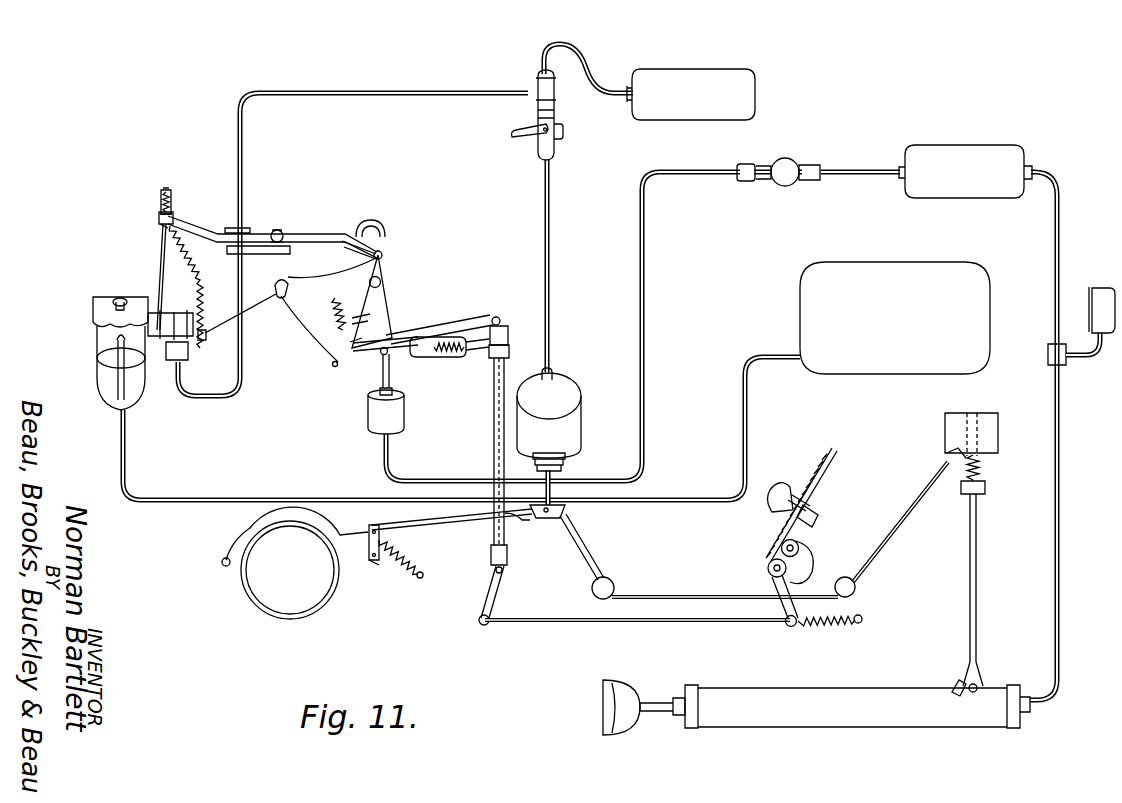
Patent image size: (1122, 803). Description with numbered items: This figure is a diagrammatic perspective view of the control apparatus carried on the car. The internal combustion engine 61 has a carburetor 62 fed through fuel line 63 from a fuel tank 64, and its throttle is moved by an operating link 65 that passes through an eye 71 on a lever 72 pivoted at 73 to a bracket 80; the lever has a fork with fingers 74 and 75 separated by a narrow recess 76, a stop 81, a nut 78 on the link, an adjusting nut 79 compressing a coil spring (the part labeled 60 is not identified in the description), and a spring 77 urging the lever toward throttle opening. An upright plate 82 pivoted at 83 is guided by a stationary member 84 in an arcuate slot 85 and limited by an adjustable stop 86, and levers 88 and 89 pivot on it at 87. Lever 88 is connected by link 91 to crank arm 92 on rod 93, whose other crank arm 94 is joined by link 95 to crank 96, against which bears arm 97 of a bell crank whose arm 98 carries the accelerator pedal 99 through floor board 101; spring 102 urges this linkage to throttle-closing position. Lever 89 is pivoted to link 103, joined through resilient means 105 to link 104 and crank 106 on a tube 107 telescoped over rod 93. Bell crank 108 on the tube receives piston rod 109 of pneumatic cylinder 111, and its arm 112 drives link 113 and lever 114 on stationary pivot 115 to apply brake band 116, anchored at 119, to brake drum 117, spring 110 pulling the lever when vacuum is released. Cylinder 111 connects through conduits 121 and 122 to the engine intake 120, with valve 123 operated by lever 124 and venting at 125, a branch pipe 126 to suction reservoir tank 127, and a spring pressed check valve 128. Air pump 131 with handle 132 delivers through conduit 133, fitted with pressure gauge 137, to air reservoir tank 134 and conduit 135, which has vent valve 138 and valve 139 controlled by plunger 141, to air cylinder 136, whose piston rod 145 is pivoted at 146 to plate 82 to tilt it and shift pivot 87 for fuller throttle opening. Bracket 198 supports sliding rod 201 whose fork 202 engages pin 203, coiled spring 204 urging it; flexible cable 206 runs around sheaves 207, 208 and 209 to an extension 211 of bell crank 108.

The threaded post 60 is at (160, 200).
The internal combustion engine 61 is at (333, 303).
The carburetor 62 is at (108, 337).
The fuel line 63 is at (297, 498).
The fuel tank 64 is at (905, 275).
The operating link 65 is at (158, 275).
The eye 71 is at (158, 216).
The lever 72 is at (258, 233).
The pivot 73 is at (284, 232).
The finger 74 is at (370, 220).
The finger 75 is at (360, 254).
The recess 76 is at (381, 250).
The spring 77 is at (190, 254).
The nut 78 is at (162, 225).
The adjusting nut 79 is at (176, 196).
The bracket 80 is at (272, 255).
The stop 81 is at (246, 227).
The plate 82 is at (314, 326).
The pivot 83 is at (356, 342).
The stationary member 84 is at (260, 308).
The arcuate slot 85 is at (282, 300).
The adjustable stop 86 is at (333, 366).
The pivot 87 is at (381, 281).
The lever 88 is at (382, 300).
The lever 89 is at (372, 317).
The link 91 is at (492, 314).
The crank arm 92 is at (501, 321).
The rod 93 is at (509, 336).
The crank arm 94 is at (492, 598).
The link 95 is at (702, 624).
The crank 96 is at (788, 626).
The bell crank arm 97 is at (807, 563).
The bell crank arm 98 is at (818, 512).
The accelerator pedal 99 is at (791, 484).
The floor board 101 is at (827, 477).
The spring 102 is at (845, 624).
The link 103 is at (410, 350).
The link 104 is at (476, 352).
The resilient means 105 is at (450, 357).
The crank 106 is at (510, 352).
The tube 107 is at (494, 445).
The bell crank 108 is at (576, 532).
The piston rod 109 is at (558, 471).
The spring 110 is at (419, 578).
The pneumatic cylinder 111 is at (591, 365).
The arm 112 is at (520, 522).
The link 113 is at (478, 522).
The lever 114 is at (380, 558).
The stationary pivot 115 is at (372, 563).
The brake band 116 is at (248, 533).
The brake drum 117 is at (272, 600).
The anchorage 119 is at (222, 566).
The intake 120 is at (177, 340).
The conduit 121 is at (551, 229).
The conduit 122 is at (238, 153).
The valve 123 is at (545, 142).
The lever 124 is at (512, 135).
The vent opening 125 is at (565, 136).
The branch pipe 126 is at (611, 92).
The suction reservoir tank 127 is at (710, 92).
The check valve 128 is at (190, 362).
The air pump 131 is at (880, 695).
The operating handle 132 is at (620, 692).
The conduit 133 is at (1061, 232).
The air reservoir tank 134 is at (995, 183).
The conduit 135 is at (647, 230).
The air cylinder 136 is at (400, 416).
The air pressure gauge 137 is at (1105, 300).
The vent valve 138 is at (744, 182).
The valve 139 is at (811, 181).
The plunger 141 is at (785, 186).
The piston rod 145 is at (383, 364).
The pivot 146 is at (381, 354).
The bracket 198 is at (944, 425).
The rod 201 is at (969, 586).
The fork 202 is at (960, 678).
The pin 203 is at (978, 686).
The coiled spring 204 is at (985, 470).
The flexible cable 206 is at (712, 594).
The sheave 207 is at (958, 460).
The sheave 208 is at (850, 578).
The sheave 209 is at (612, 582).
The extension 211 is at (566, 512).